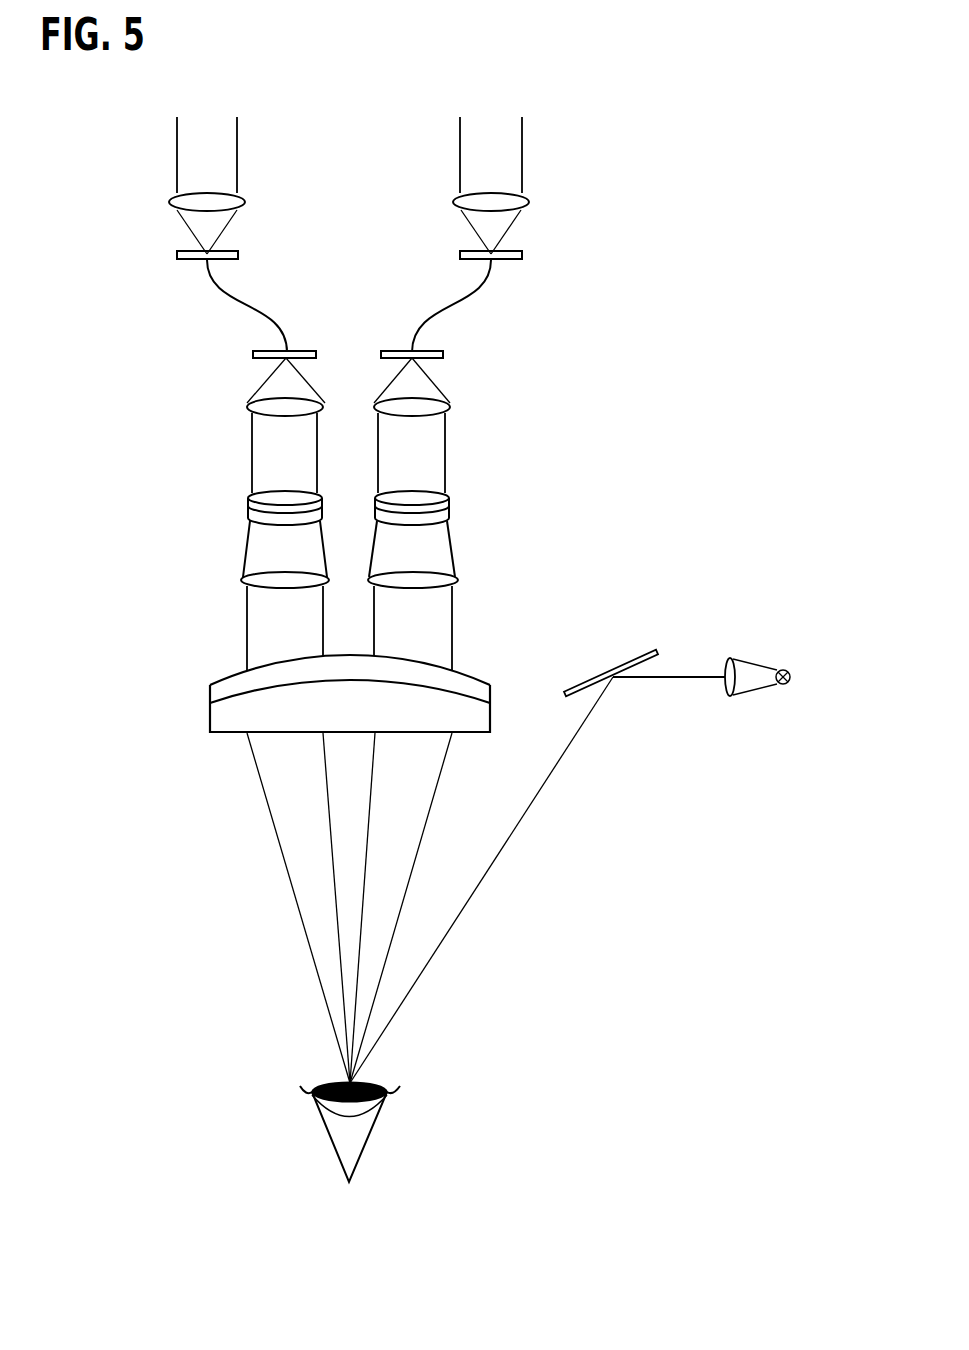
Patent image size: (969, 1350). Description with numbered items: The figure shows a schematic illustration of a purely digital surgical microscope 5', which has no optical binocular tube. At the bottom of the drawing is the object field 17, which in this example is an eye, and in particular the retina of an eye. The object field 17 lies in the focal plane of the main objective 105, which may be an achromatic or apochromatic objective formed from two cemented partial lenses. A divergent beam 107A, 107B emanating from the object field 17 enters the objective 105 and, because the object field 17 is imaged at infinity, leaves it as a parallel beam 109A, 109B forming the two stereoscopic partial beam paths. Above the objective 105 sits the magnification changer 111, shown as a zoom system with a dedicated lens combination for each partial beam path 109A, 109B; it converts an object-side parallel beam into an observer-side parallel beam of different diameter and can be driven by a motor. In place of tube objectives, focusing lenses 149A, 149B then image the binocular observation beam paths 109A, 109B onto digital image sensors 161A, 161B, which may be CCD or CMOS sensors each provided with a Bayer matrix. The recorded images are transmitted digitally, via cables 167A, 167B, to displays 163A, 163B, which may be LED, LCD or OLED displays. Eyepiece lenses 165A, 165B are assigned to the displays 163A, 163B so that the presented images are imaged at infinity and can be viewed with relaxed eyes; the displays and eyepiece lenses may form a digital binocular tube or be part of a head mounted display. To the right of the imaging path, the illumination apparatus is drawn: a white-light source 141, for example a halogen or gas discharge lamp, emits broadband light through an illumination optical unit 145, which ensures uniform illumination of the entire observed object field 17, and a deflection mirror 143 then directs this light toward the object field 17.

The surgical microscope 5' is at (720, 273).
The eyepiece lens 165A is at (170, 202).
The eyepiece lens 165B is at (528, 201).
The display 163A is at (176, 255).
The display 163B is at (524, 255).
The cable 167A is at (227, 297).
The cable 167B is at (470, 297).
The image sensor 161A is at (252, 353).
The image sensor 161B is at (445, 353).
The focusing lens 149A is at (247, 403).
The focusing lens 149B is at (450, 403).
The magnification changer 111 is at (212, 489).
The parallel beam 109A is at (246, 626).
The parallel beam 109B is at (453, 626).
The objective 105 is at (190, 650).
The divergent beam 107A is at (280, 858).
The divergent beam 107B is at (433, 802).
The deflection mirror 143 is at (626, 660).
The illumination optical unit 145 is at (773, 662).
The white-light source 141 is at (791, 673).
The object field 17 is at (371, 1085).